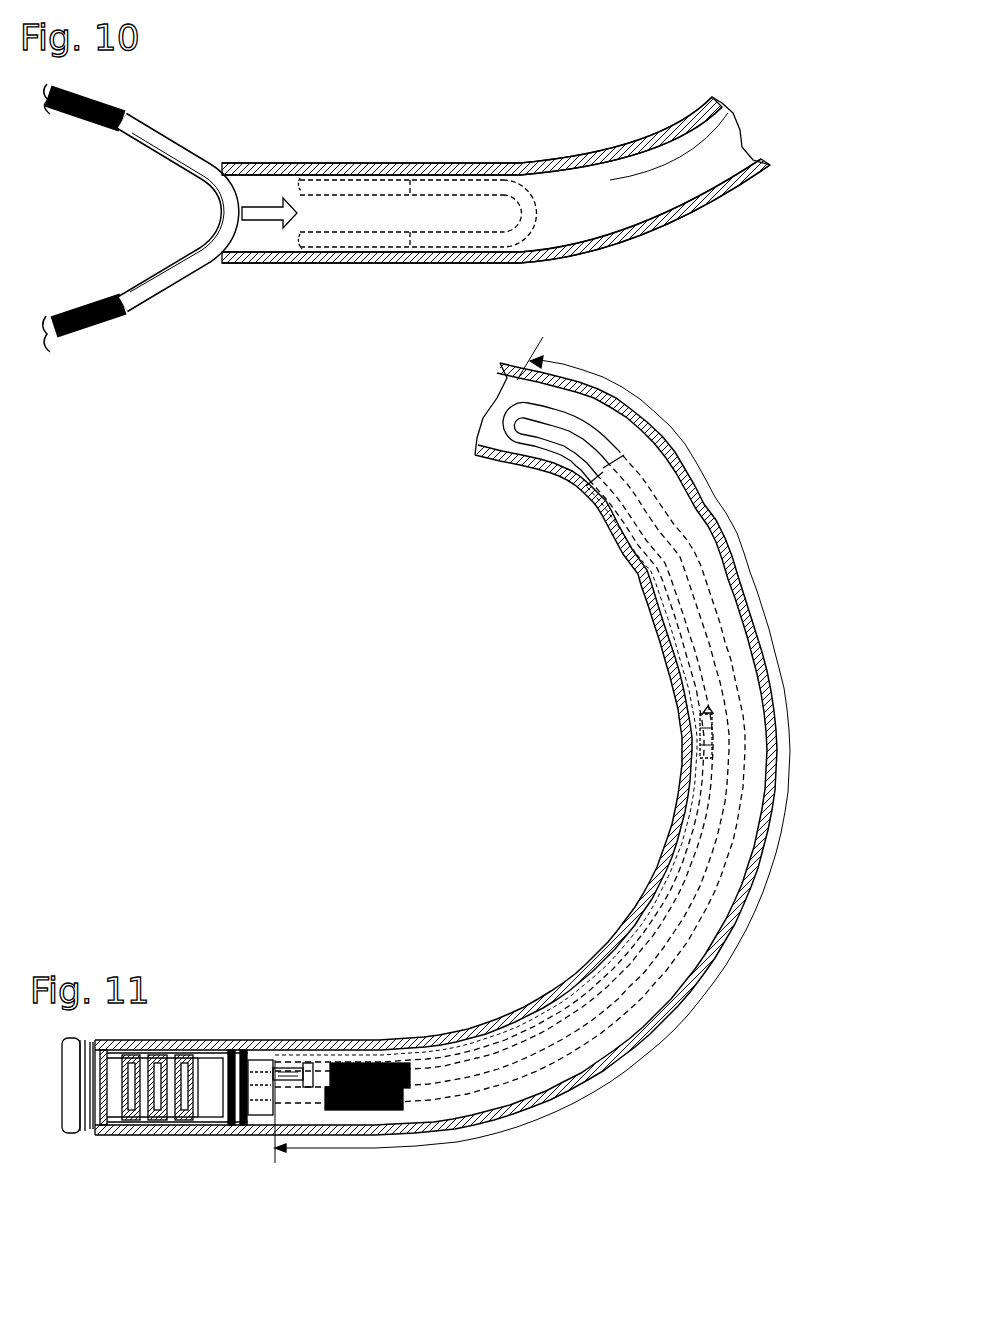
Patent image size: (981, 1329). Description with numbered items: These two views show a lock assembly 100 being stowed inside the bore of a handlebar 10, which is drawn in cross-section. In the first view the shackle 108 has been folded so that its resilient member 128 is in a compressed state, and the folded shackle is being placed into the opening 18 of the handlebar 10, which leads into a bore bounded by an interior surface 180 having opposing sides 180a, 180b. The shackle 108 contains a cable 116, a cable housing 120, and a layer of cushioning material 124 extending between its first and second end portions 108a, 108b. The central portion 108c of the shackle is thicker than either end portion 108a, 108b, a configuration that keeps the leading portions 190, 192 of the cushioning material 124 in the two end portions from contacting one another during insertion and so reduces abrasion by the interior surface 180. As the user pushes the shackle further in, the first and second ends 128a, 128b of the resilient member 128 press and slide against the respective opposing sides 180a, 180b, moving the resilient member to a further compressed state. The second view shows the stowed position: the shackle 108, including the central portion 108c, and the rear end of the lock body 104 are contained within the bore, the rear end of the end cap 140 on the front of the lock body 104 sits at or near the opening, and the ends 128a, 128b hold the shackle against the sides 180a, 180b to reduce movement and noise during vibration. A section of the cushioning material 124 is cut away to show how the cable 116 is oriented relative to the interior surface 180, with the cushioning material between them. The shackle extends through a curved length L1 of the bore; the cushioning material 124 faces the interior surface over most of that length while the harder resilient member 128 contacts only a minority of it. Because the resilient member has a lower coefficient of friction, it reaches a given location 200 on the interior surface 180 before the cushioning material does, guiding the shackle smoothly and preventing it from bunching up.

In FIG. 10, the handlebar 10 is at (666, 140).
In FIG. 11, the handlebar 10 is at (200, 1038).
In FIG. 10, the opening 18 is at (238, 193).
In FIG. 11, the lock assembly 100 is at (54, 1085).
In FIG. 11, the lock body 104 is at (135, 1124).
In FIG. 10, the shackle 108 is at (98, 351).
In FIG. 11, the shackle 108 is at (546, 1086).
In FIG. 10, the first end portion of shackle 108a is at (70, 108).
In FIG. 10, the second end portion of shackle 108b is at (67, 320).
In FIG. 10, the central portion of shackle 108c is at (190, 275).
In FIG. 11, the central portion of shackle 108c is at (505, 412).
In FIG. 11, the cable 116 is at (700, 714).
In FIG. 11, the cable housing 120 is at (700, 735).
In FIG. 11, the cushioning material 124 is at (702, 698).
In FIG. 10, the resilient member 128 is at (153, 128).
In FIG. 11, the resilient member 128 is at (526, 442).
In FIG. 10, the first end of resilient member 128a is at (432, 198).
In FIG. 11, the first end of resilient member 128a is at (606, 470).
In FIG. 10, the second end of resilient member 128b is at (430, 229).
In FIG. 11, the second end of resilient member 128b is at (598, 466).
In FIG. 11, the end cap 140 is at (72, 1134).
In FIG. 10, the interior surface 180 is at (270, 243).
In FIG. 11, the interior surface 180 is at (258, 1124).
In FIG. 10, the first opposing side 180a is at (593, 165).
In FIG. 11, the first opposing side 180a is at (328, 1124).
In FIG. 10, the second opposing side 180b is at (593, 250).
In FIG. 11, the second opposing side 180b is at (298, 1054).
In FIG. 10, the leading portion of cushioning material 190 is at (112, 108).
In FIG. 10, the leading portion of cushioning material 192 is at (118, 318).
In FIG. 11, the location 200 is at (696, 770).
In FIG. 11, the length L1 is at (722, 511).